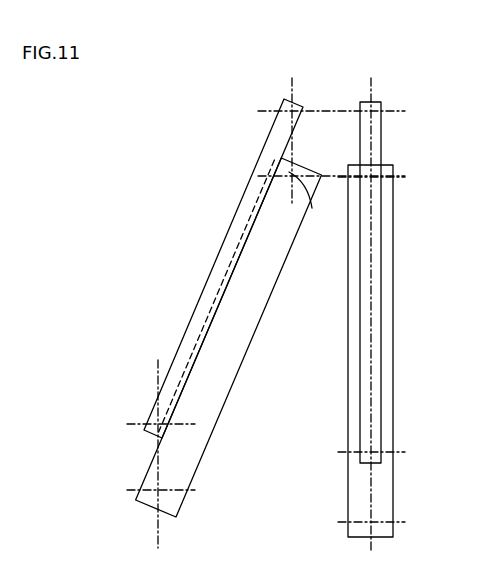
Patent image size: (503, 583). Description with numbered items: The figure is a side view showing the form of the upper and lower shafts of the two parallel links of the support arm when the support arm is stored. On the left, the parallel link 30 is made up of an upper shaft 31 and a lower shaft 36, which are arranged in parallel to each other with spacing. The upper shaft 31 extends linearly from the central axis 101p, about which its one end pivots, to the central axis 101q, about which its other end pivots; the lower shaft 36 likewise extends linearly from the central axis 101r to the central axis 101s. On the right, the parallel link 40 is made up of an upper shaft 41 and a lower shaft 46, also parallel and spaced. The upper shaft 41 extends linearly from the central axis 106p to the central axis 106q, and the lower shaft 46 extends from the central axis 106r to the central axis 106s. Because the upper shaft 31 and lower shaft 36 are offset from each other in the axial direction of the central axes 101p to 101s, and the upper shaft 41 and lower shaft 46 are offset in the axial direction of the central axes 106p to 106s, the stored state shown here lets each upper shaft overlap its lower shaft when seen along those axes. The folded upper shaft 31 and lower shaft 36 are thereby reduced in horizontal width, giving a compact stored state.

The parallel link 30 is at (220, 308).
The upper shaft 31 is at (232, 238).
The lower shaft 36 is at (252, 275).
The parallel link 40 is at (416, 319).
The upper shaft 41 is at (368, 289).
The lower shaft 46 is at (385, 323).
The central axis 101p is at (145, 412).
The central axis 101q is at (280, 100).
The central axis 101r is at (144, 480).
The central axis 101s is at (312, 208).
The central axis 106p is at (372, 113).
The central axis 106q is at (372, 455).
The central axis 106r is at (372, 178).
The central axis 106s is at (372, 524).